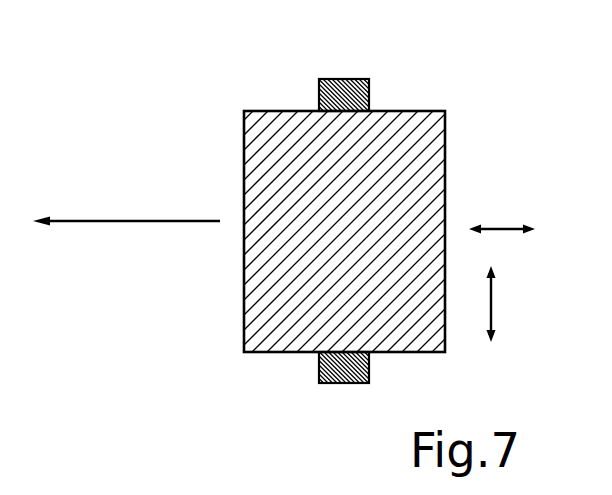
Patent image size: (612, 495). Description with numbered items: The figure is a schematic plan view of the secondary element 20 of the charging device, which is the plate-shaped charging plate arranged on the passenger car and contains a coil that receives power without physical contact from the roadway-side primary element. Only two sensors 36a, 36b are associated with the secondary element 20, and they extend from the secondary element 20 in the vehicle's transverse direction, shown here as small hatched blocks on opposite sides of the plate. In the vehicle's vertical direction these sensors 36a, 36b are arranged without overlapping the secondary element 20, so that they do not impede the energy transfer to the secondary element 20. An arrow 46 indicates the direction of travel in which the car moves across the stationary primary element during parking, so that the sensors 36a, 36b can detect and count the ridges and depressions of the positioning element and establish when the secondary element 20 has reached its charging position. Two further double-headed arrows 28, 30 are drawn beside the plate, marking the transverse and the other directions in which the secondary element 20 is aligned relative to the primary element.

The secondary element 20 is at (433, 148).
The horizontal direction arrow 28 is at (502, 227).
The vertical direction arrow 30 is at (493, 302).
The sensor 36a is at (345, 90).
The sensor 36b is at (345, 377).
The arrow 46 is at (152, 220).